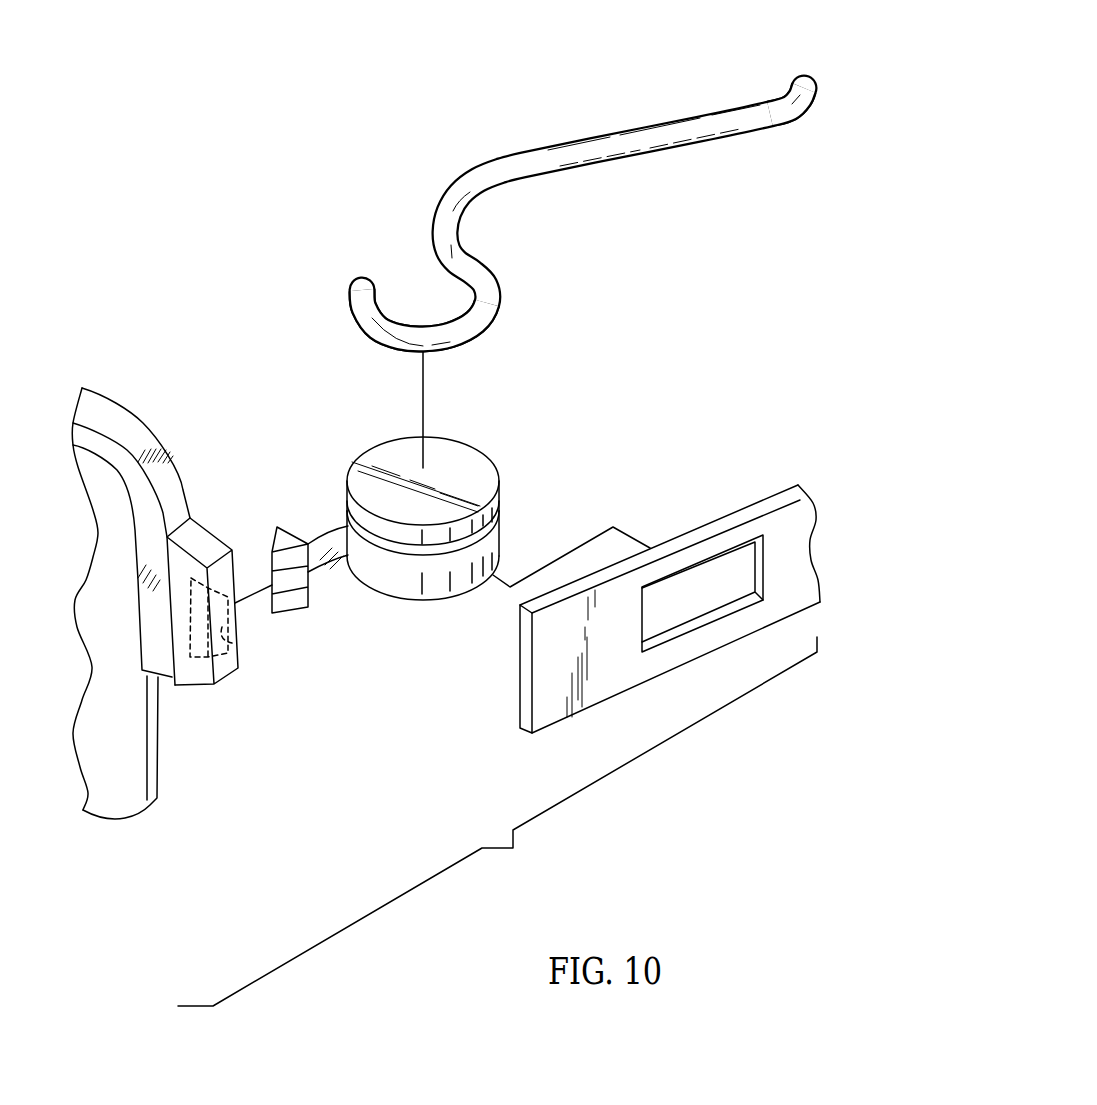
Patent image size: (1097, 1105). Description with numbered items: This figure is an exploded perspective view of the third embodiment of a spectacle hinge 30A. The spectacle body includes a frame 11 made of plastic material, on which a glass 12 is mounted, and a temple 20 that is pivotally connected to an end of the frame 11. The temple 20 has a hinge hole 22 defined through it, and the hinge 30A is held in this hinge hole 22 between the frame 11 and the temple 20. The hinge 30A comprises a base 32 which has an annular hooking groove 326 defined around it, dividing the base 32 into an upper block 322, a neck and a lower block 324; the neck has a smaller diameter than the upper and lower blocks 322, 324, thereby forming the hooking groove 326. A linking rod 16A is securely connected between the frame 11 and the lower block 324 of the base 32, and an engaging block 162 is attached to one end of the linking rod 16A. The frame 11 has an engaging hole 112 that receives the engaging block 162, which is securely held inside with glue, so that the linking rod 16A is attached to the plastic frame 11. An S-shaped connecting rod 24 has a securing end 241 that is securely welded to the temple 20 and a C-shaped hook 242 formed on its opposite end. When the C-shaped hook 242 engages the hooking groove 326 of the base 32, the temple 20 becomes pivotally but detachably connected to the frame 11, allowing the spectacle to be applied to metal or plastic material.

The frame 11 is at (142, 438).
The glass 12 is at (137, 730).
The engaging hole 112 is at (232, 643).
The engaging block 162 is at (271, 546).
The linking rod 16A is at (327, 540).
The temple 20 is at (670, 589).
The hinge hole 22 is at (700, 623).
The connecting rod 24 is at (583, 196).
The securing end 241 is at (800, 90).
The C-shaped hook 242 is at (488, 313).
The hinge 30A is at (278, 462).
The base 32 is at (459, 524).
The upper block 322 is at (452, 450).
The lower block 324 is at (383, 585).
The hooking groove 326 is at (493, 537).